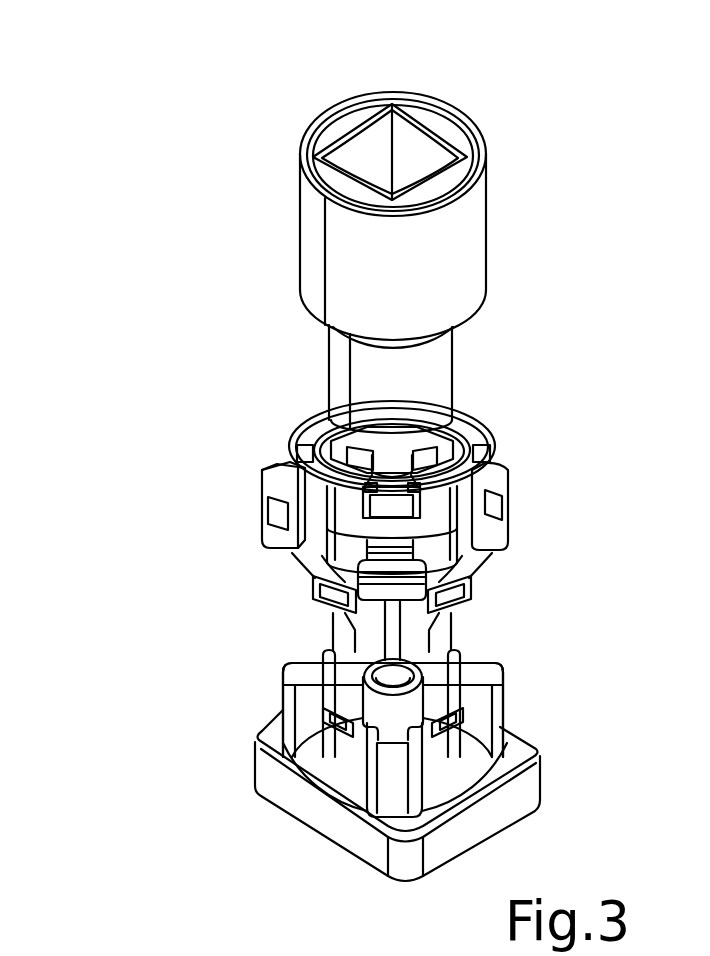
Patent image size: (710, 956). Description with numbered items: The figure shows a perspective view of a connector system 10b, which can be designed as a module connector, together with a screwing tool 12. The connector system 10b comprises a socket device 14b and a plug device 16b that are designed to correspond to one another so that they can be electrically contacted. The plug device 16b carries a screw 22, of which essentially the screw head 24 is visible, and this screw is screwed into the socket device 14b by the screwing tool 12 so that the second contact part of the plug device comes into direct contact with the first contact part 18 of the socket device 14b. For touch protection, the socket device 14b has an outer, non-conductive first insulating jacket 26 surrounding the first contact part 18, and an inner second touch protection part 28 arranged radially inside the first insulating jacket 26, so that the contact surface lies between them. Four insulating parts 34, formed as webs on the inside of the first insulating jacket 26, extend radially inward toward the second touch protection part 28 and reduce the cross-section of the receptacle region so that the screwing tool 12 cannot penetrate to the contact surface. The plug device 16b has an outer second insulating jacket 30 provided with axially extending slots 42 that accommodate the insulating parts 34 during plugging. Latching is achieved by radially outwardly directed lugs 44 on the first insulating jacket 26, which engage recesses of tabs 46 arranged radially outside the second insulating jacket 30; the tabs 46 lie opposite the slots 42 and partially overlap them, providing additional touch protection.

The connector system 10b is at (190, 445).
The screwing tool 12 is at (310, 96).
The socket device 14b is at (521, 660).
The plug device 16b is at (497, 409).
The first contact part 18 is at (303, 664).
The screw 22 is at (322, 418).
The screw head 24 is at (322, 418).
The first insulating jacket 26 is at (457, 767).
The second touch protection part 28 is at (385, 707).
The second insulating jacket 30 is at (407, 632).
The insulating part 34 is at (285, 677).
The slot 42 is at (330, 627).
The lug 44 is at (262, 752).
The tab 46 is at (307, 590).